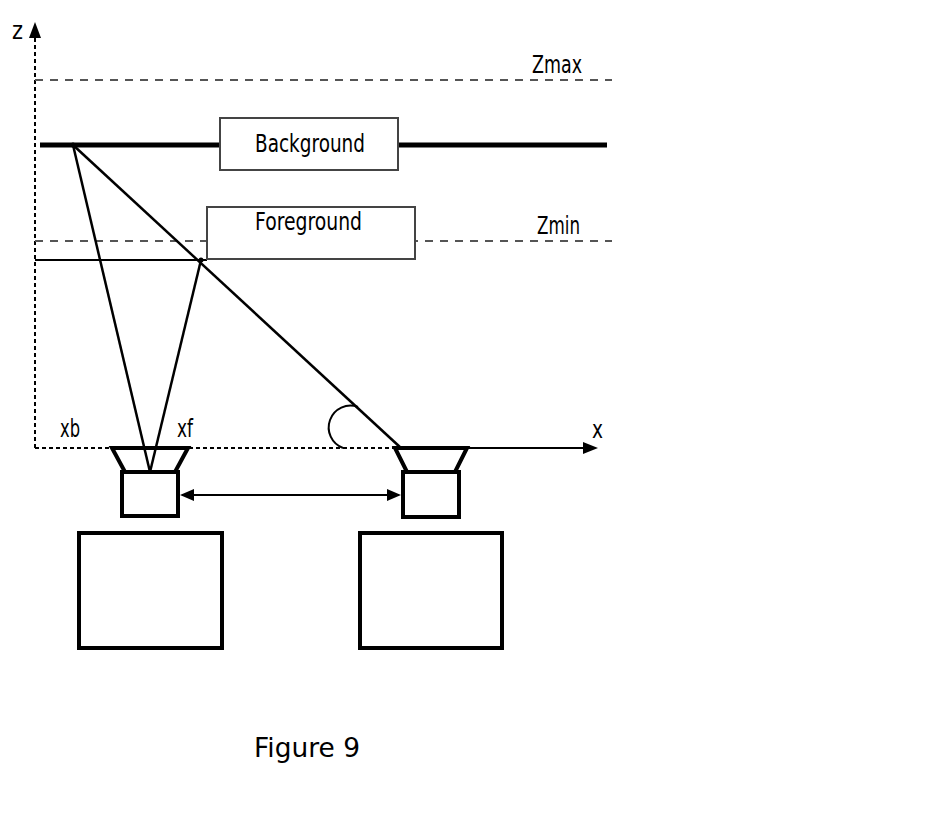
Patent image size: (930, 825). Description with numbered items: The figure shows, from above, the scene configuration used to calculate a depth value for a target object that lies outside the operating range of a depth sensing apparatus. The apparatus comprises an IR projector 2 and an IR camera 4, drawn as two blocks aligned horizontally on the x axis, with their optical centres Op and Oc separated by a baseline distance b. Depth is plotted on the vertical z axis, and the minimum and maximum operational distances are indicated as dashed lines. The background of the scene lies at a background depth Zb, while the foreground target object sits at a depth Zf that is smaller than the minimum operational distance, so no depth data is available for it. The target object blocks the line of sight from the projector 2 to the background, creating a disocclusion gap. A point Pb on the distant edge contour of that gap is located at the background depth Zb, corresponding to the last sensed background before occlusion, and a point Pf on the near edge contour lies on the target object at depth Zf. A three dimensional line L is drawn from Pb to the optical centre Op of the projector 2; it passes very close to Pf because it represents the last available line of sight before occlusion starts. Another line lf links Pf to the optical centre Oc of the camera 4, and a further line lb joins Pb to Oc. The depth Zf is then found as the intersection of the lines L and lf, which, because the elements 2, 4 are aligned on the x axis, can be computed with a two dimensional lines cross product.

The IR projector 2 is at (79, 572).
The IR camera 4 is at (502, 568).
The optical centre of the camera Oc is at (150, 482).
The optical centre of the projector Op is at (431, 482).
The point on the distant edge contour Pb is at (71, 129).
The point on the near edge contour Pf is at (189, 274).
The three dimensional line L is at (237, 296).
The camera ray to background point lb is at (111, 308).
The three dimensional line lf is at (177, 366).
The baseline distance b is at (290, 484).
The background depth Zb is at (305, 143).
The depth of the target object Zf is at (107, 258).